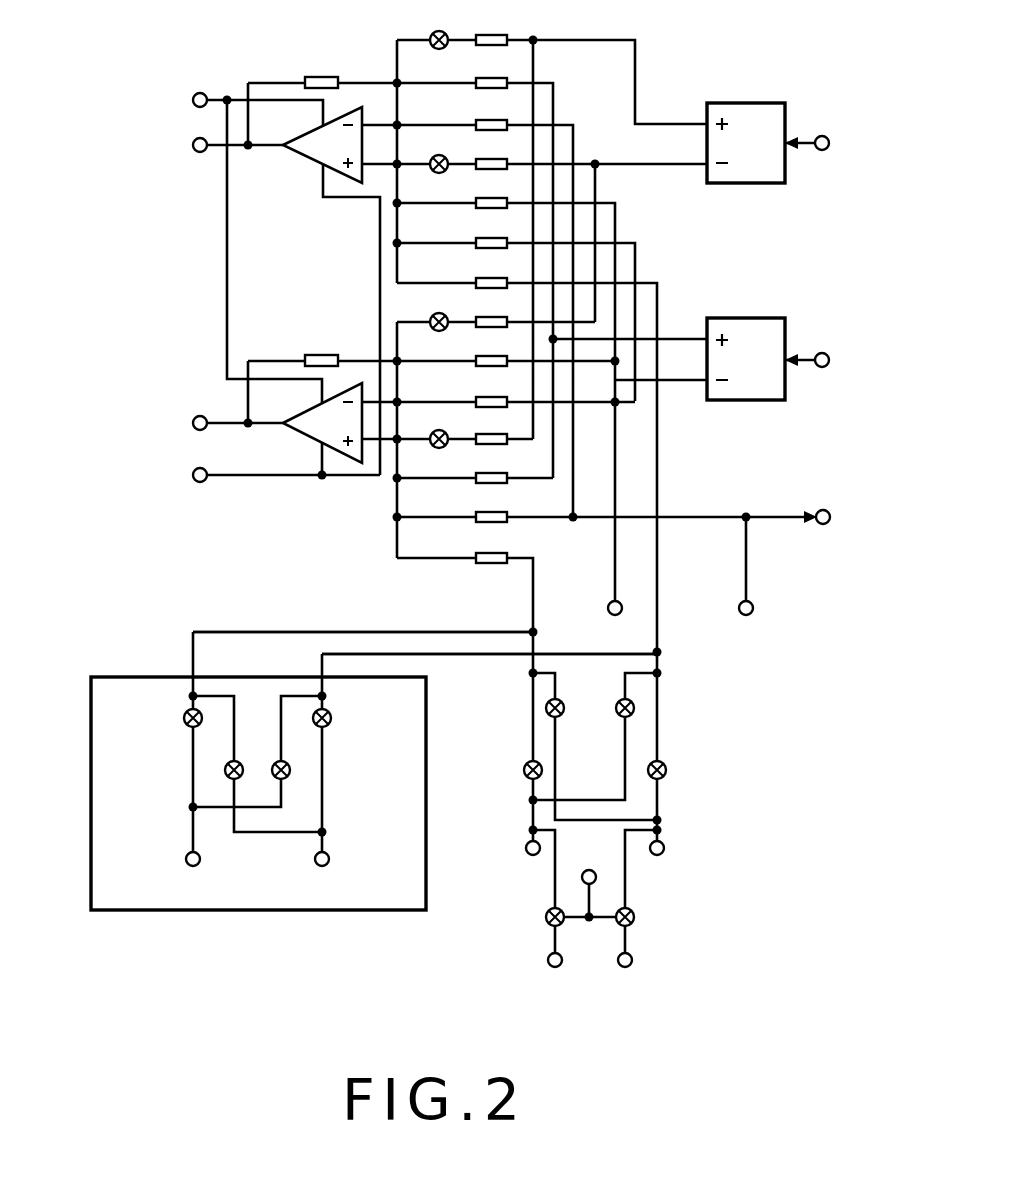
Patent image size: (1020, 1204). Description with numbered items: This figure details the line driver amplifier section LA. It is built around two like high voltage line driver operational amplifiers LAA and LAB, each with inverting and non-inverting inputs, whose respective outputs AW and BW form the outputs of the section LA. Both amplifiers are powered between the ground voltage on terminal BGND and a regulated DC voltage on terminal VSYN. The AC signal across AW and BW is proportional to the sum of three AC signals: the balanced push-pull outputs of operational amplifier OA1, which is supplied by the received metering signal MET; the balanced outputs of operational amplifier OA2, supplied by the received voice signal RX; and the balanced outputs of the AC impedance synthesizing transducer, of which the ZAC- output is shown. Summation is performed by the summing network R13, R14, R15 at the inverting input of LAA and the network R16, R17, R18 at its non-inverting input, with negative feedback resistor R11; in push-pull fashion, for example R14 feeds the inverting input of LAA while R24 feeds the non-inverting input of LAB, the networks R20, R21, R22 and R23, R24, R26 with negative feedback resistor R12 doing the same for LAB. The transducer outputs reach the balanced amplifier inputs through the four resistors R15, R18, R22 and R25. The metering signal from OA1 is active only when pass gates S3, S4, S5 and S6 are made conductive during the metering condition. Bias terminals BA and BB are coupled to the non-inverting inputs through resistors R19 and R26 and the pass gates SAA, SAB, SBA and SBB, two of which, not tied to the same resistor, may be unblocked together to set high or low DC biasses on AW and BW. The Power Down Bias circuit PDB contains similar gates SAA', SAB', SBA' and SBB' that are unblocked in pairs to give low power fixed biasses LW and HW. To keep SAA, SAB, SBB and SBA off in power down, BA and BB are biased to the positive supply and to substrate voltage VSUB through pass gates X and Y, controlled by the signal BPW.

The negative feedback resistor R11 is at (321, 68).
The negative feedback resistor R12 is at (321, 346).
The summing network resistor R13 is at (490, 25).
The summing network resistor R14 is at (490, 68).
The summing network resistor R15 is at (490, 110).
The summing network resistor R16 is at (490, 149).
The summing network resistor R17 is at (490, 188).
The summing network resistor R18 is at (490, 228).
The bias resistor R19 is at (490, 268).
The summing network resistor R20 is at (490, 307).
The summing network resistor R21 is at (490, 346).
The summing network resistor R22 is at (490, 387).
The summing network resistor R23 is at (490, 424).
The summing network resistor R24 is at (490, 463).
The summing network resistor R25 is at (490, 502).
The bias resistor R26 is at (490, 543).
The pass gate S3 is at (422, 27).
The pass gate S4 is at (422, 151).
The pass gate S5 is at (422, 309).
The pass gate S6 is at (422, 426).
The high voltage line driver operational amplifier LAA is at (322, 145).
The high voltage line driver operational amplifier LAB is at (322, 423).
The operational amplifier OA1 is at (746, 143).
The operational amplifier OA2 is at (746, 359).
The ground terminal BGND is at (158, 101).
The output AW is at (175, 146).
The output BW is at (175, 424).
The regulated DC voltage terminal VSYN is at (161, 476).
The received metering signal MET is at (820, 125).
The received voice signal RX is at (820, 343).
The transmit input TX is at (822, 502).
The balanced push-pull output of transducer ZAC ZAC- is at (615, 624).
The line driver amplifier section LA is at (226, 609).
The Power Down Bias circuit PDB is at (91, 790).
The pass gate SBB' is at (162, 718).
The pass gate SAA' is at (354, 718).
The pass gate SBA' is at (187, 770).
The pass gate SAB' is at (330, 770).
The high fixed bias HW is at (192, 877).
The low fixed bias LW is at (322, 877).
The pass gate SBA is at (518, 708).
The pass gate SAB is at (664, 708).
The pass gate SBB is at (503, 770).
The pass gate SAA is at (685, 770).
The terminal BB is at (530, 864).
The terminal BA is at (655, 864).
The power down control signal BPW is at (589, 863).
The pass gate X is at (541, 917).
The pass gate Y is at (637, 917).
The substrate voltage VSUB is at (552, 977).